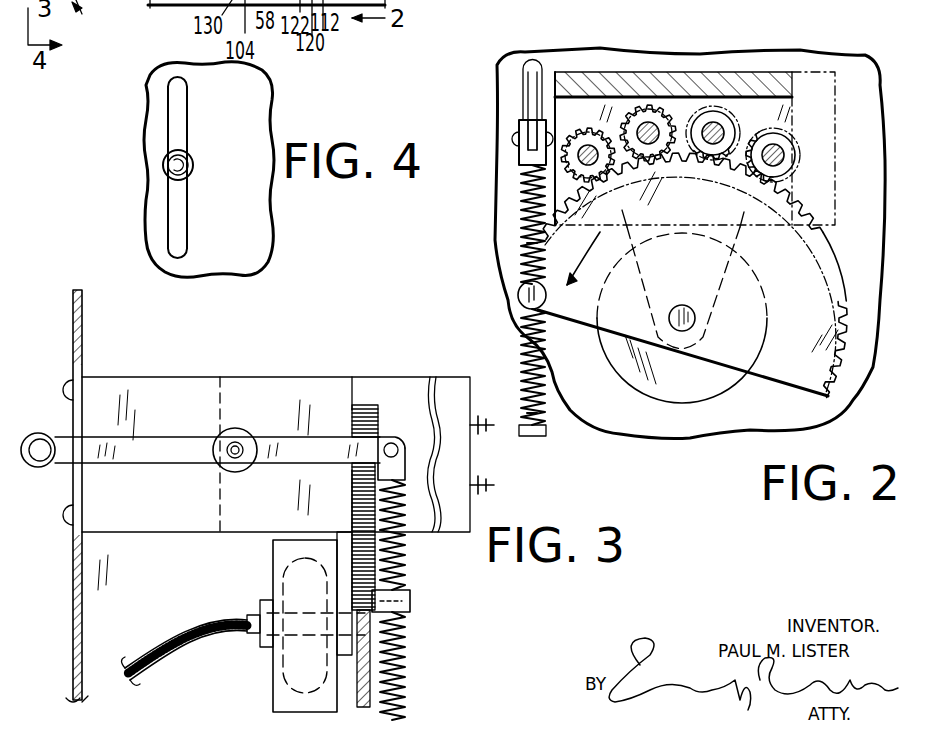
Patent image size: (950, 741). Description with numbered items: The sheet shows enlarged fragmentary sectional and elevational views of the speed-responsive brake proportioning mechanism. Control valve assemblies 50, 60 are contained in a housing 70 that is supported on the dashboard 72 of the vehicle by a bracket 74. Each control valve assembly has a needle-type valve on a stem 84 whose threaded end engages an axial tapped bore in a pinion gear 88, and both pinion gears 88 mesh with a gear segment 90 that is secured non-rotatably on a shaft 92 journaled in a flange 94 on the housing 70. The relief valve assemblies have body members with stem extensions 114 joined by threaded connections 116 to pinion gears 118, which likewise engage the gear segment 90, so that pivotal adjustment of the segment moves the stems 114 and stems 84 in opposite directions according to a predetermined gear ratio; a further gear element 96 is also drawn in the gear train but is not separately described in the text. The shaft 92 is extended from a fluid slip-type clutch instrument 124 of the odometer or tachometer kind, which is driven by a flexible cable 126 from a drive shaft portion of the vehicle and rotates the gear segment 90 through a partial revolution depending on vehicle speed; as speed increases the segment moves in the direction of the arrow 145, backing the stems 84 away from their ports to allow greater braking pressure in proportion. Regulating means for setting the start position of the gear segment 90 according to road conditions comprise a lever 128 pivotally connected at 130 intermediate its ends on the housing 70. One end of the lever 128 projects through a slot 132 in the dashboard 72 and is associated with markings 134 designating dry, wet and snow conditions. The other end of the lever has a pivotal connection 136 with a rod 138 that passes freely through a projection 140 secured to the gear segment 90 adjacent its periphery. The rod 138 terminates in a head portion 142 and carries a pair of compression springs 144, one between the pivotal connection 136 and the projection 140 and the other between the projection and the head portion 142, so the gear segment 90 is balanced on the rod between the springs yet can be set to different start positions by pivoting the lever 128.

In FIG. 2, the control valve assembly 50 is at (818, 70).
In FIG. 3, the control valve assembly 50 is at (445, 395).
In FIG. 2, the control valve assembly 60 is at (633, 80).
In FIG. 3, the control valve assembly 60 is at (284, 390).
In FIG. 3, the housing 70 is at (332, 377).
In FIG. 4, the dashboard 72 is at (250, 190).
In FIG. 2, the dashboard 72 is at (760, 408).
In FIG. 3, the dashboard 72 is at (72, 612).
In FIG. 3, the bracket 74 is at (148, 390).
In FIG. 2, the stem 84 is at (762, 165).
In FIG. 2, the pinion gear 88 is at (764, 128).
In FIG. 2, the gear segment 90 is at (830, 355).
In FIG. 3, the gear segment 90 is at (378, 560).
In FIG. 2, the shaft 92 is at (682, 331).
In FIG. 3, the shaft 92 is at (300, 635).
In FIG. 2, the flange 94 is at (725, 245).
In FIG. 3, the flange 94 is at (345, 548).
In FIG. 2, the gear 96 is at (775, 155).
In FIG. 2, the stem extension 114 is at (586, 148).
In FIG. 2, the threaded connection 116 is at (647, 128).
In FIG. 2, the pinion gear 118 is at (658, 105).
In FIG. 3, the pinion gear 118 is at (368, 408).
In FIG. 2, the instrument 124 is at (653, 397).
In FIG. 3, the instrument 124 is at (286, 697).
In FIG. 3, the flexible cable 126 is at (160, 648).
In FIG. 4, the lever 128 is at (170, 167).
In FIG. 2, the lever 128 is at (533, 150).
In FIG. 3, the lever 128 is at (43, 440).
In FIG. 3, the pivotal connection 130 is at (236, 445).
In FIG. 4, the slot 132 is at (180, 110).
In FIG. 2, the slot 132 is at (530, 88).
In FIG. 3, the slot 132 is at (78, 488).
In FIG. 4, the markings 134 is at (233, 102).
In FIG. 2, the pivotal connection 136 is at (515, 137).
In FIG. 3, the pivotal connection 136 is at (392, 448).
In FIG. 2, the rod 138 is at (532, 242).
In FIG. 2, the projection 140 is at (518, 292).
In FIG. 3, the projection 140 is at (404, 602).
In FIG. 2, the head portion 142 is at (540, 437).
In FIG. 2, the compression springs 144 is at (532, 226).
In FIG. 3, the compression springs 144 is at (398, 555).
In FIG. 2, the arrow 145 is at (577, 260).